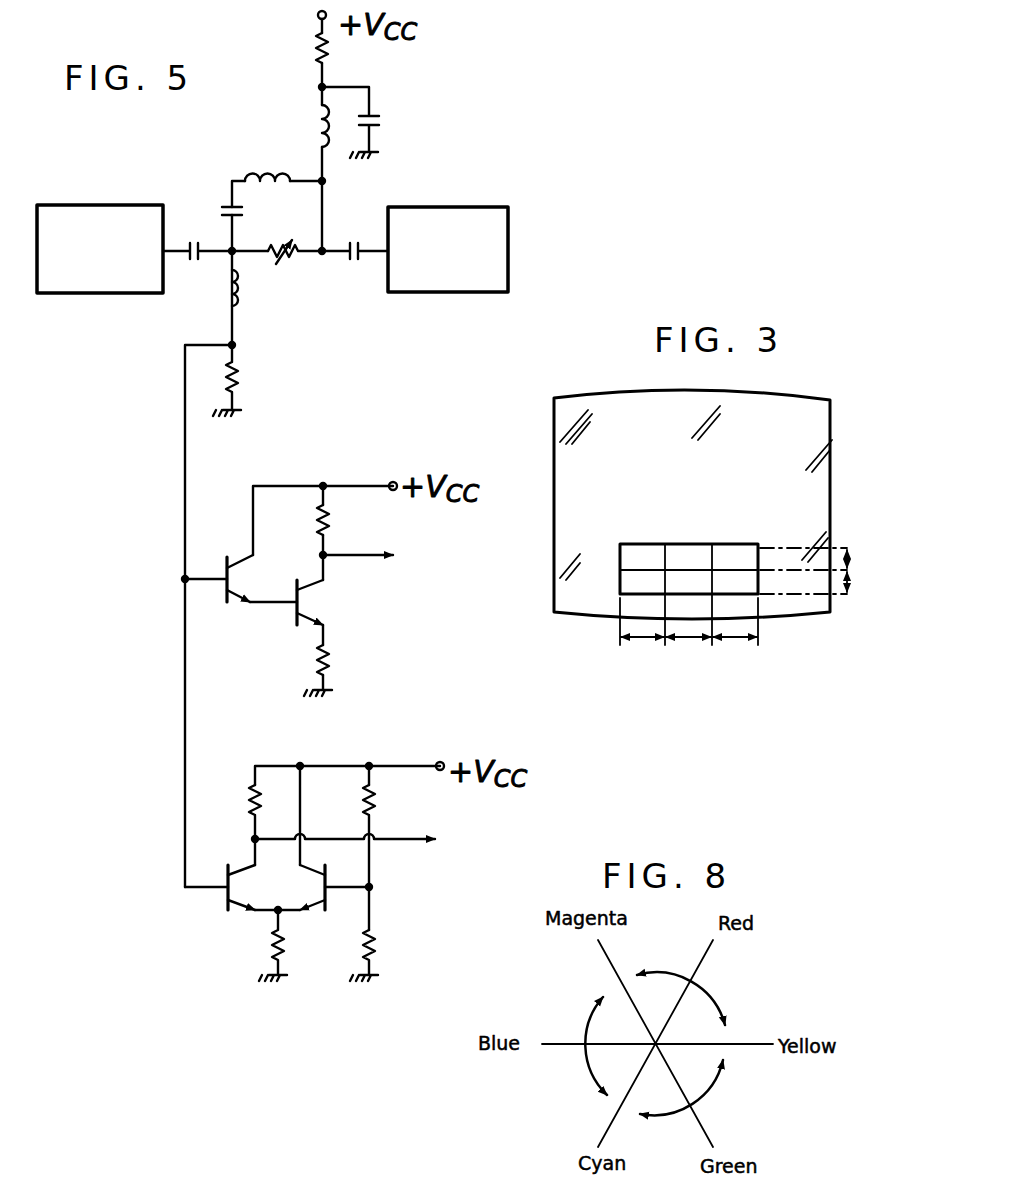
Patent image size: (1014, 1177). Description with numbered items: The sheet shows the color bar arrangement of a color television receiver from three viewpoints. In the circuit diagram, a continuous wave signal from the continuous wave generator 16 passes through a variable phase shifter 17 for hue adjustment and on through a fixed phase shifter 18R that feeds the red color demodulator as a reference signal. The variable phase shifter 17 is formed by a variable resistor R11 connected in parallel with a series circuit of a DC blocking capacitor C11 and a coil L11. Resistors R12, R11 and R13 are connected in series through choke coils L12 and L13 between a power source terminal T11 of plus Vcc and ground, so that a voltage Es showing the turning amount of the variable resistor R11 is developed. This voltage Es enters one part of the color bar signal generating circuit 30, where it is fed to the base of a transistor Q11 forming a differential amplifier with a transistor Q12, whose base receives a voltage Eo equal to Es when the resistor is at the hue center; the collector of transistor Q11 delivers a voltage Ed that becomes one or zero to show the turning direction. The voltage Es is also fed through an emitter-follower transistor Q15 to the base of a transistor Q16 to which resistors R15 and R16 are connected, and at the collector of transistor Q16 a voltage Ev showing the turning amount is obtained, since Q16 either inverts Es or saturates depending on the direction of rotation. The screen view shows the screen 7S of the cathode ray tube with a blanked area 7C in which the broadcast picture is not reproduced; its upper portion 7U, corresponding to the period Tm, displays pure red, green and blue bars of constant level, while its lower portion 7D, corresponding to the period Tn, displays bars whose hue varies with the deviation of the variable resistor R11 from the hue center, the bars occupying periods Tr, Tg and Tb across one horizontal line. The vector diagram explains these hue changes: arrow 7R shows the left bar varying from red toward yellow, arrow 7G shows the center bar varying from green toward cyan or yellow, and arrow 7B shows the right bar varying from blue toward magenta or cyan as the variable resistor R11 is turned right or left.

In FIG. 5, the continuous wave generator 16 is at (120, 295).
In FIG. 5, the variable phase shifter 17 is at (375, 391).
In FIG. 5, the fixed phase shifter 18R is at (435, 294).
In FIG. 5, the color bar signal generating circuit 30 is at (458, 714).
In FIG. 5, the power source terminal T11 is at (318, 15).
In FIG. 5, the resistor R12 is at (328, 60).
In FIG. 5, the choke coil L12 is at (320, 112).
In FIG. 5, the coil L11 is at (272, 150).
In FIG. 5, the capacitor C11 is at (222, 208).
In FIG. 5, the variable resistor R11 is at (306, 271).
In FIG. 5, the choke coil L13 is at (236, 302).
In FIG. 5, the resistor R13 is at (238, 378).
In FIG. 5, the voltage Es is at (185, 458).
In FIG. 5, the resistor R15 is at (329, 530).
In FIG. 5, the voltage Ev is at (379, 557).
In FIG. 5, the transistor Q15 is at (222, 596).
In FIG. 5, the transistor Q16 is at (292, 618).
In FIG. 5, the resistor R16 is at (329, 668).
In FIG. 5, the voltage Ed is at (367, 847).
In FIG. 5, the voltage Eo is at (372, 893).
In FIG. 5, the transistor Q11 is at (223, 905).
In FIG. 5, the transistor Q12 is at (330, 905).
In FIG. 3, the screen 7S is at (831, 440).
In FIG. 3, the area 7C is at (600, 660).
In FIG. 3, the upper portion 7U is at (570, 602).
In FIG. 3, the lower portion 7D is at (608, 602).
In FIG. 3, the period Tm is at (866, 542).
In FIG. 3, the period Tn is at (848, 588).
In FIG. 3, the period Tr is at (650, 640).
In FIG. 3, the period Tg is at (696, 640).
In FIG. 3, the period Tb is at (740, 640).
In FIG. 8, the arrow 7R is at (715, 1003).
In FIG. 8, the arrow 7B is at (588, 1070).
In FIG. 8, the arrow 7G is at (717, 1090).